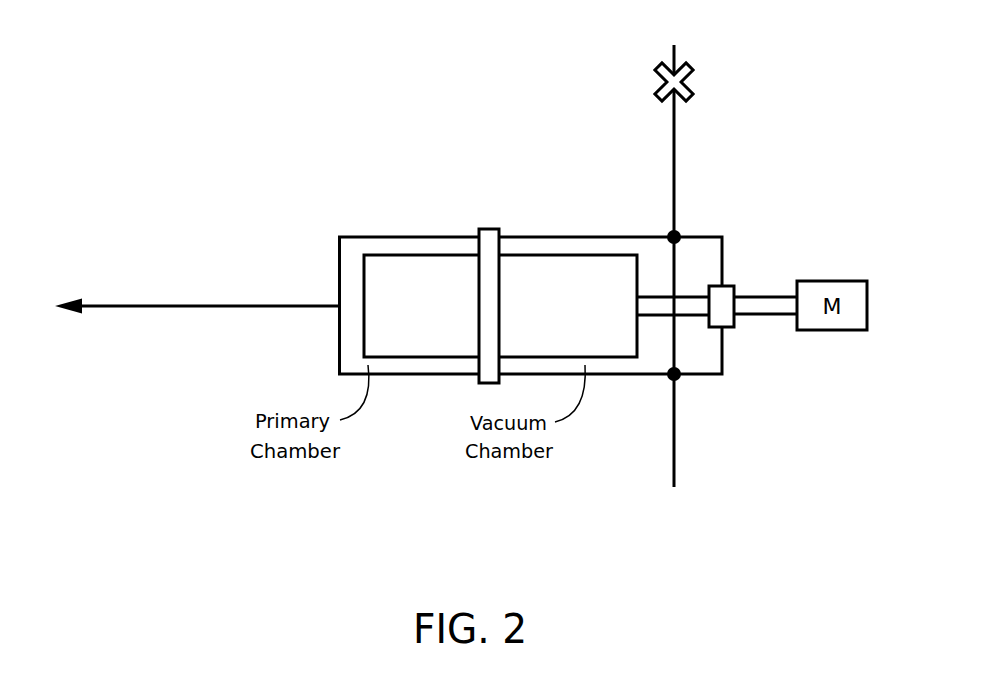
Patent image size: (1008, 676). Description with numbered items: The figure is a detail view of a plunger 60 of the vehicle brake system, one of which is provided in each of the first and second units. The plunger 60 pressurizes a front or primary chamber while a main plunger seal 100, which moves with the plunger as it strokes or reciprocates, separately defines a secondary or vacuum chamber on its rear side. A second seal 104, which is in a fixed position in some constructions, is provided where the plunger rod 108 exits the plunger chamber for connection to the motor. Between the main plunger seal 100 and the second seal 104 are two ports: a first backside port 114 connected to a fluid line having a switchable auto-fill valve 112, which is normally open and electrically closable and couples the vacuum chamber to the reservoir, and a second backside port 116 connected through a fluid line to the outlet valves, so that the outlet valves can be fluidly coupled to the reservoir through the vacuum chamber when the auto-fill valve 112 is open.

The plunger 60 is at (555, 153).
The main plunger seal 100 is at (490, 236).
The second seal 104 is at (722, 304).
The plunger rod 108 is at (665, 317).
The auto-fill valve 112 is at (704, 79).
The first backside port 114 is at (668, 236).
The second backside port 116 is at (682, 381).